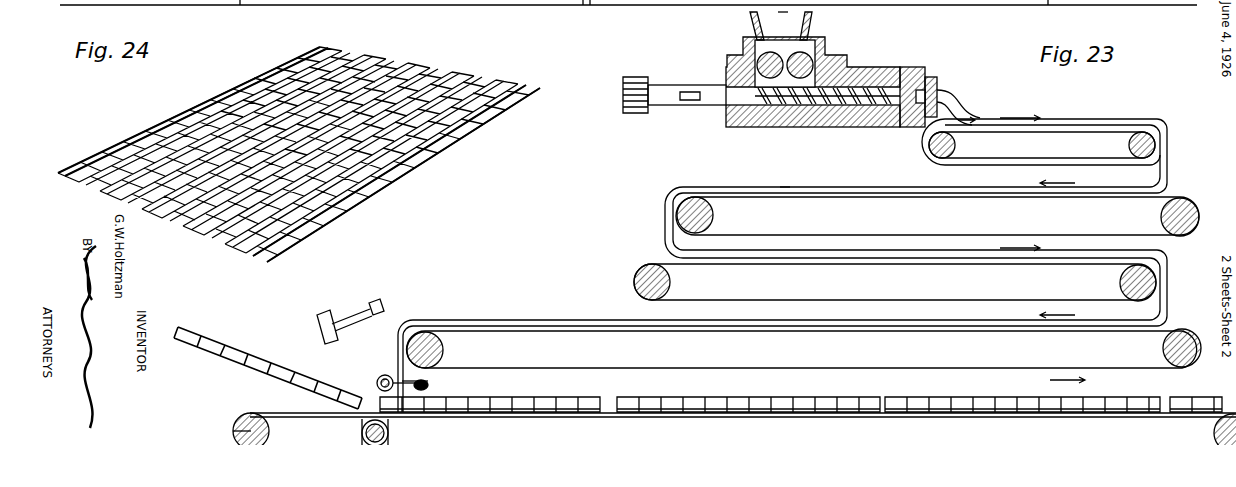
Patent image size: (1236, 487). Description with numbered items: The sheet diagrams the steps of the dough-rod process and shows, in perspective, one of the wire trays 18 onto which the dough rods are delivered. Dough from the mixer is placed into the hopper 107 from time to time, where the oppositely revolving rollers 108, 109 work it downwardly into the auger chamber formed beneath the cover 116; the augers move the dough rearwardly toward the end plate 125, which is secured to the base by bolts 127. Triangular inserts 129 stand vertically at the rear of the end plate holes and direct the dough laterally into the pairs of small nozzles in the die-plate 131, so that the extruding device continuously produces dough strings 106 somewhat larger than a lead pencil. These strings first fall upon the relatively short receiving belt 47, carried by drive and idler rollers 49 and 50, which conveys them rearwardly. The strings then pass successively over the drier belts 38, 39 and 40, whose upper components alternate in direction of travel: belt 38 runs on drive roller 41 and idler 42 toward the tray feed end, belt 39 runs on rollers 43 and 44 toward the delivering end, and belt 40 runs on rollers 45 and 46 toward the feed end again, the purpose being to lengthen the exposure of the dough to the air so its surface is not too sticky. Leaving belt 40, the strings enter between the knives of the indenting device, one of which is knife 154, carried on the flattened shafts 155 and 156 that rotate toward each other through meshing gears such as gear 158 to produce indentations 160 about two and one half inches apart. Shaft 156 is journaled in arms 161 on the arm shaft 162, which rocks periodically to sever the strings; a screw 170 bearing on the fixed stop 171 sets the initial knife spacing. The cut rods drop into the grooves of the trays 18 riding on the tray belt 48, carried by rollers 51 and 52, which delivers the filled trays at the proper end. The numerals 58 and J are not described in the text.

In FIG. 24, the tray 18 is at (152, 129).
In FIG. 23, the tray 18 is at (262, 357).
In FIG. 23, the drier belt 38 is at (785, 195).
In FIG. 23, the drier belt 39 is at (766, 263).
In FIG. 23, the drier belt 40 is at (475, 330).
In FIG. 23, the drive roller 41 is at (677, 215).
In FIG. 23, the idler 42 is at (1185, 200).
In FIG. 23, the drive roller 43 is at (1165, 281).
In FIG. 23, the idler roller 44 is at (634, 283).
In FIG. 23, the drive roller 45 is at (447, 351).
In FIG. 23, the idler roller 46 is at (1185, 332).
In FIG. 23, the receiving belt 47 is at (1120, 130).
In FIG. 23, the tray belt 48 is at (262, 413).
In FIG. 23, the drive roller 49 is at (1165, 134).
In FIG. 23, the idler roller 50 is at (950, 130).
In FIG. 23, the drive roller 51 is at (1212, 412).
In FIG. 23, the idler roller 52 is at (233, 432).
In FIG. 23, the drying chamber 58 is at (794, 180).
In FIG. 23, the dough strings 106 is at (1013, 124).
In FIG. 23, the hopper 107 is at (752, 12).
In FIG. 23, the roller 108 is at (810, 30).
In FIG. 23, the roller 109 is at (800, 48).
In FIG. 23, the cover 116 is at (850, 70).
In FIG. 23, the end plate 125 is at (912, 80).
In FIG. 23, the bolts 127 is at (640, 77).
In FIG. 23, the triangular inserts 129 is at (933, 80).
In FIG. 23, the die-plate 131 is at (925, 120).
In FIG. 23, the knife 154 is at (374, 366).
In FIG. 23, the shaft 155 is at (430, 388).
In FIG. 23, the shaft 156 is at (377, 382).
In FIG. 23, the gear 158 is at (430, 384).
In FIG. 23, the indentations 160 is at (519, 400).
In FIG. 23, the arms 161 is at (362, 428).
In FIG. 23, the arm shaft 162 is at (390, 434).
In FIG. 23, the screw 170 is at (350, 318).
In FIG. 23, the fixed stop 171 is at (322, 316).
In FIG. 23, the feed opening J is at (783, 13).